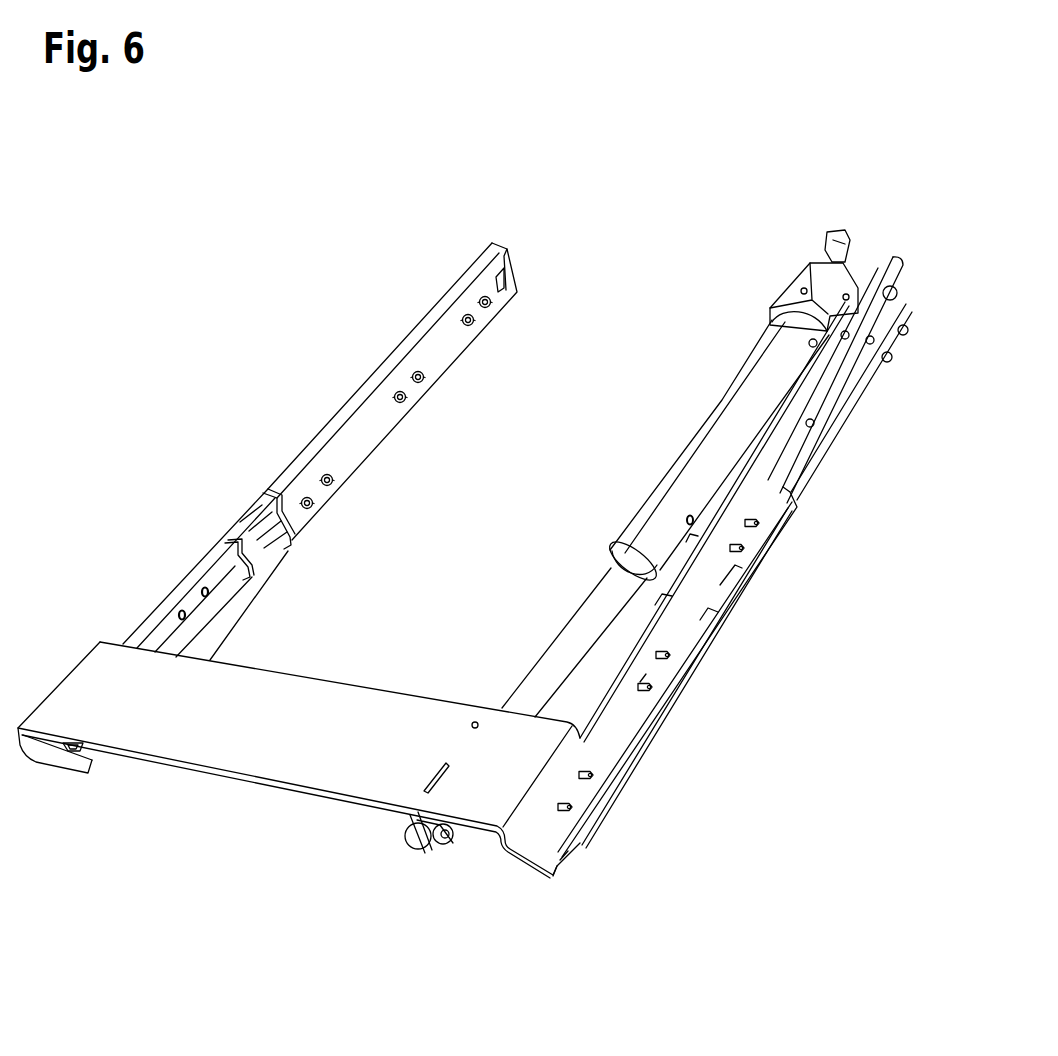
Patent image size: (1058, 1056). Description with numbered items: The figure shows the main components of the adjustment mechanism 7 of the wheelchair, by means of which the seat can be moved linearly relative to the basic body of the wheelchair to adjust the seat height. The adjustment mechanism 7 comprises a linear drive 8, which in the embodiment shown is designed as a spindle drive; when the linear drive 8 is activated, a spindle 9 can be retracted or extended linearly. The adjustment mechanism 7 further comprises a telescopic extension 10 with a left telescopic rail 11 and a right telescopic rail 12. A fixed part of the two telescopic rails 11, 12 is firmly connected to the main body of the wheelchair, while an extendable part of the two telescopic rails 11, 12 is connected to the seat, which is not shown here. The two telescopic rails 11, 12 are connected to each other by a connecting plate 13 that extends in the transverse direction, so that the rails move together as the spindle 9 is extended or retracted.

The adjustment mechanism 7 is at (785, 633).
The linear drive 8 is at (688, 478).
The spindle 9 is at (575, 628).
The telescopic extension 10 is at (835, 568).
The left telescopic rail 11 is at (838, 407).
The right telescopic rail 12 is at (363, 392).
The connecting plate 13 is at (241, 752).